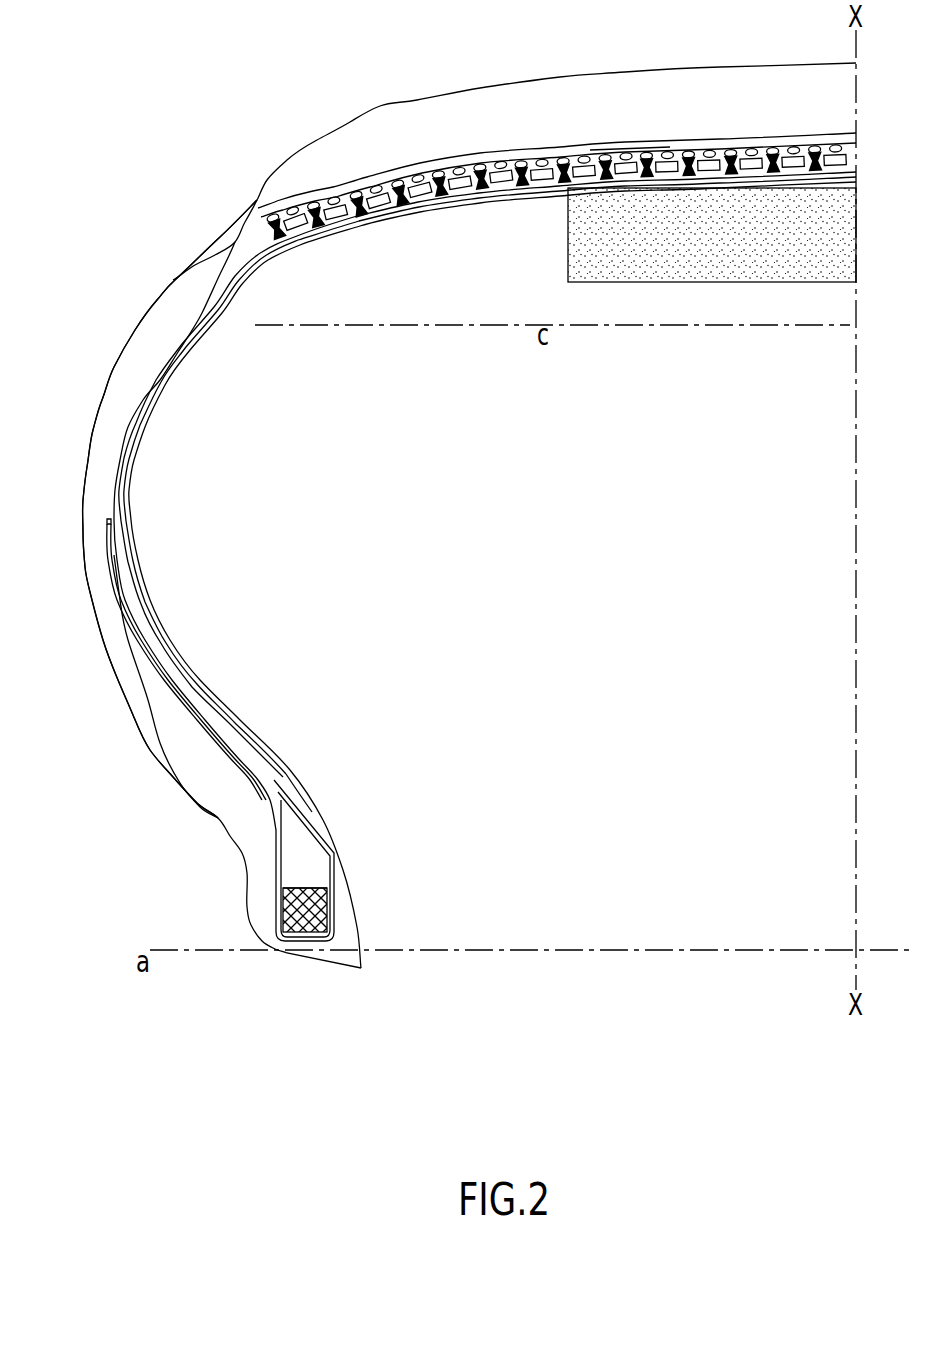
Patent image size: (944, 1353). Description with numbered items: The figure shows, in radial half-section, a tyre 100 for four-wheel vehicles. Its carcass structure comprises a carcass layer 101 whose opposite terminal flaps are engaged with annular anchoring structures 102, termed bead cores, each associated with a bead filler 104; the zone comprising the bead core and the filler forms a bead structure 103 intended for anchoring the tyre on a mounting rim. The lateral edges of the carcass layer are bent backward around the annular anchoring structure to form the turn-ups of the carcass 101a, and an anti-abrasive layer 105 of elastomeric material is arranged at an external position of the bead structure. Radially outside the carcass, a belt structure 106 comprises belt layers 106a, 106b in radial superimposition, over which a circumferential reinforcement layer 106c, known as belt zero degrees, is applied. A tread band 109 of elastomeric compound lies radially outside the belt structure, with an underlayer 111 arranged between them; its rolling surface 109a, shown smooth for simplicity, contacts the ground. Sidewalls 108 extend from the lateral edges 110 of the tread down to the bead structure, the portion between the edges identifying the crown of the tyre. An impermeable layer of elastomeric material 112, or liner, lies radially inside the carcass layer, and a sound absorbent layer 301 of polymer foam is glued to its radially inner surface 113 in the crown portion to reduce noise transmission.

The tyre 100 is at (133, 305).
The carcass layer 101 is at (178, 352).
The turn-ups of the carcass 101a is at (166, 669).
The annular anchoring structure 102 is at (304, 916).
The bead structure 103 is at (312, 867).
The bead filler 104 is at (297, 837).
The anti-abrasive layer 105 is at (212, 772).
The belt structure 106 is at (734, 142).
The belt layer 106a is at (553, 181).
The belt layer 106b is at (370, 194).
The circumferential reinforcement layer 106c is at (617, 156).
The sidewall 108 is at (102, 455).
The tread band 109 is at (457, 126).
The rolling surface 109a is at (376, 104).
The lateral edge of the tread 110 is at (248, 192).
The underlayer 111 is at (313, 186).
The impermeable layer of elastomeric material 112 is at (133, 460).
The radially inner surface 113 is at (148, 591).
The sound absorbent layer 301 is at (718, 243).